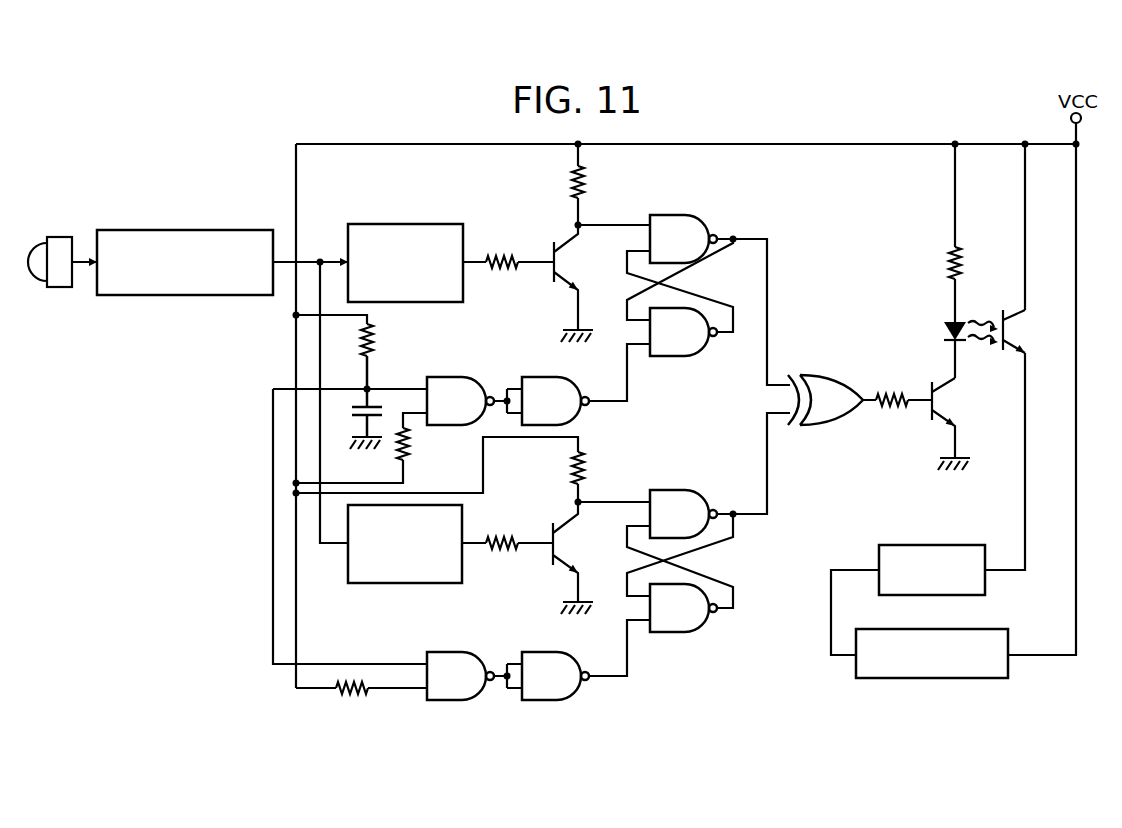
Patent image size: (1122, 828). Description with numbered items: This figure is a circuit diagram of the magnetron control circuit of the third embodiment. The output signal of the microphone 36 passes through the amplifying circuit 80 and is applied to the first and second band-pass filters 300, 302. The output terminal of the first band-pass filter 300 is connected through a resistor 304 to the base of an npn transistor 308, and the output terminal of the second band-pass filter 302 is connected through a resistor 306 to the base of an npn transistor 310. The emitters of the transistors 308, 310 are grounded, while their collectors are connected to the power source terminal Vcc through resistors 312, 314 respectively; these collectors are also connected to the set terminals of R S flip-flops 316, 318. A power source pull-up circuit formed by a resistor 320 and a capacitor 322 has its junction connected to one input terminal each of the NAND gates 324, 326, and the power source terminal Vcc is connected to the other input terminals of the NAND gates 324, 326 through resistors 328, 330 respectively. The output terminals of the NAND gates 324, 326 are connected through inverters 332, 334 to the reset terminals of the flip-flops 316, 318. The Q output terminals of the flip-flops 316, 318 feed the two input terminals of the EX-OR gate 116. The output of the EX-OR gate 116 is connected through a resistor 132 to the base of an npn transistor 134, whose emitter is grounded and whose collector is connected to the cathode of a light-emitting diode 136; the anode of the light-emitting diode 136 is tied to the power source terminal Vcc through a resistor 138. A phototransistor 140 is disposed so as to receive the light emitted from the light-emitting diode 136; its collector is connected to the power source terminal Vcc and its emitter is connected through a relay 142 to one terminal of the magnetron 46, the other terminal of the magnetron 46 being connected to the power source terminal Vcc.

The microphone 36 is at (58, 237).
The amplifying circuit 80 is at (190, 230).
The first band-pass filter 300 is at (401, 224).
The second band-pass filter 302 is at (462, 522).
The resistor 304 is at (499, 260).
The resistor 306 is at (509, 550).
The npn transistor 308 is at (568, 268).
The npn transistor 310 is at (560, 548).
The resistor 312 is at (582, 178).
The resistor 314 is at (583, 462).
The R S flip-flop 316 is at (705, 220).
The R S flip-flop 318 is at (704, 502).
The resistor 320 is at (372, 339).
The capacitor 322 is at (383, 409).
The NAND gate 324 is at (463, 377).
The NAND gate 326 is at (432, 698).
The resistor 328 is at (408, 448).
The resistor 330 is at (348, 692).
The inverter 332 is at (559, 377).
The inverter 334 is at (547, 698).
The EX-OR gate 116 is at (819, 378).
The resistor 132 is at (892, 405).
The npn transistor 134 is at (941, 398).
The light-emitting diode 136 is at (933, 326).
The resistor 138 is at (947, 264).
The phototransistor 140 is at (1016, 331).
The relay 142 is at (920, 545).
The magnetron 46 is at (932, 680).